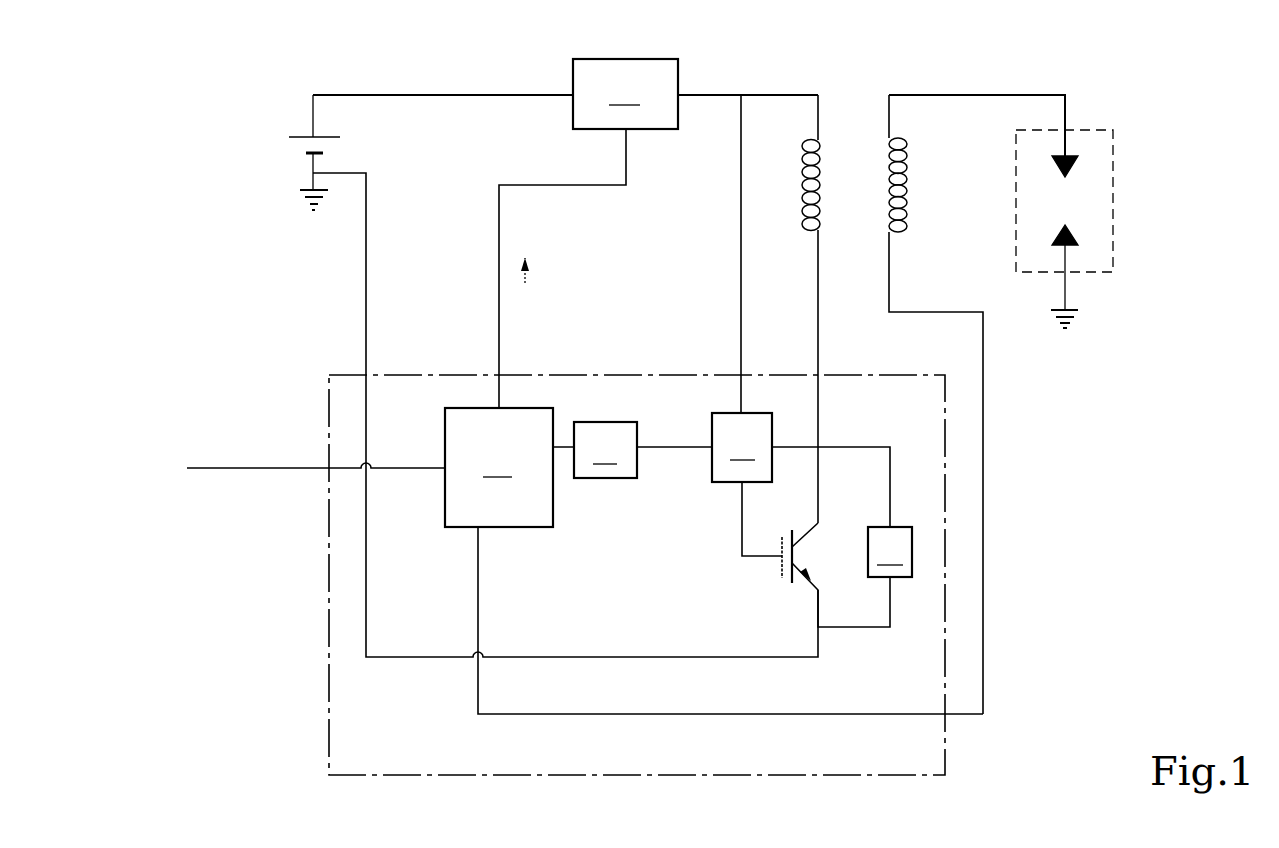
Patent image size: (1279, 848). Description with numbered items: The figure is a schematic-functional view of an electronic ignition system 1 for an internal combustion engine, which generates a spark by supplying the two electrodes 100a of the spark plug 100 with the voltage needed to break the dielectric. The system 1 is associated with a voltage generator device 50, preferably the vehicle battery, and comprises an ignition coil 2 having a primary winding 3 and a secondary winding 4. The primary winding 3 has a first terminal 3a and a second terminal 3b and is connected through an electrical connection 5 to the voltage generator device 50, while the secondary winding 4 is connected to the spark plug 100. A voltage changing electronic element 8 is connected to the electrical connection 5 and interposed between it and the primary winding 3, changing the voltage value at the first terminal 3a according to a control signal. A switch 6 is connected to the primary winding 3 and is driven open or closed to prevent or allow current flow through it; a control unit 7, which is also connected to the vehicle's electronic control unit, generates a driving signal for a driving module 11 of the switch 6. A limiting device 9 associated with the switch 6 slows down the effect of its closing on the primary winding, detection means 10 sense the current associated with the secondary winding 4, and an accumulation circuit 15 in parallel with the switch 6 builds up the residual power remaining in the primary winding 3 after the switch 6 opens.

The ignition system 1 is at (1090, 413).
The ignition coil 2 is at (864, 88).
The primary winding 3 is at (796, 146).
The first terminal 3a is at (815, 140).
The second terminal 3b is at (817, 232).
The secondary winding 4 is at (917, 156).
The electrical connection 5 is at (437, 95).
The switch 6 is at (770, 594).
The control unit 7 is at (499, 467).
The voltage changing electronic element 8 is at (625, 94).
The limiting device 9 is at (742, 447).
The detection means 10 is at (812, 715).
The driving module 11 is at (605, 450).
The accumulation circuit 15 is at (890, 552).
The voltage generator device 50 is at (290, 111).
The spark plug 100 is at (1120, 198).
The electrodes 100a is at (1074, 165).